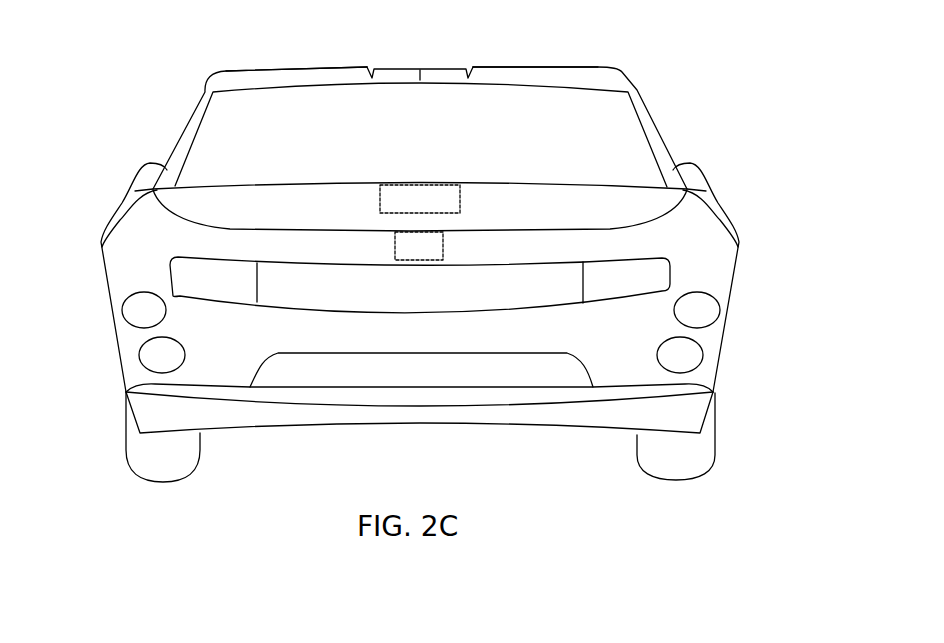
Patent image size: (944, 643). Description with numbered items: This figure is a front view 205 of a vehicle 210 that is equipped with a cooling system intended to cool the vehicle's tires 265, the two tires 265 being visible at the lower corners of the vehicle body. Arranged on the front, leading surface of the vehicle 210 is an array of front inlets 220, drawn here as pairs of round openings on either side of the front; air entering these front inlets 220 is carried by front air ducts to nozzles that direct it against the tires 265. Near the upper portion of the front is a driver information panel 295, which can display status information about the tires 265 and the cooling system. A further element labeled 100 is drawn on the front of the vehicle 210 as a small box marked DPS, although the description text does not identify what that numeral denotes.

The front view 205 is at (724, 58).
The vehicle 210 is at (263, 68).
The driver information panel 295 is at (460, 197).
The DPS system 100 is at (445, 247).
The front inlets 220 is at (150, 357).
The tires 265 is at (128, 463).